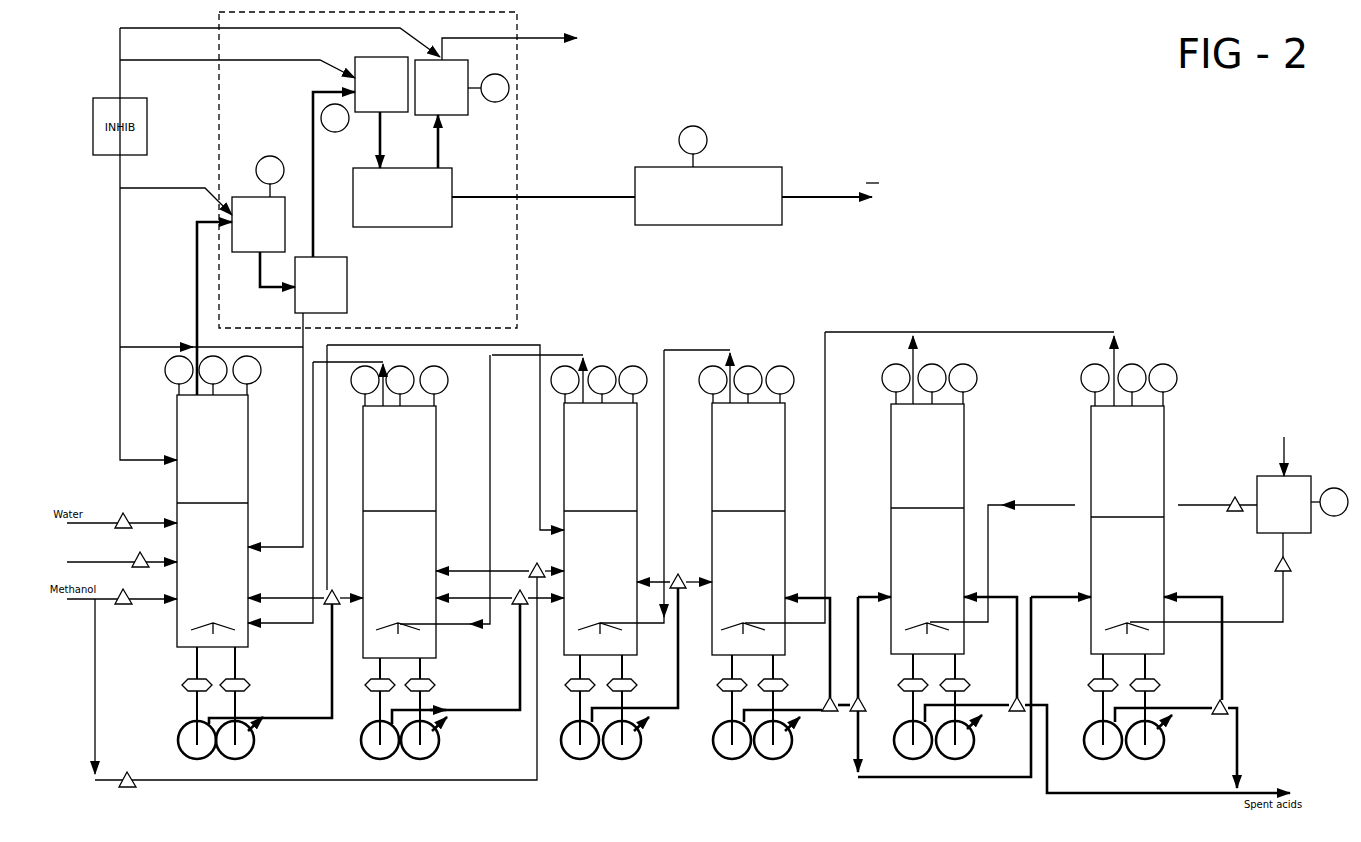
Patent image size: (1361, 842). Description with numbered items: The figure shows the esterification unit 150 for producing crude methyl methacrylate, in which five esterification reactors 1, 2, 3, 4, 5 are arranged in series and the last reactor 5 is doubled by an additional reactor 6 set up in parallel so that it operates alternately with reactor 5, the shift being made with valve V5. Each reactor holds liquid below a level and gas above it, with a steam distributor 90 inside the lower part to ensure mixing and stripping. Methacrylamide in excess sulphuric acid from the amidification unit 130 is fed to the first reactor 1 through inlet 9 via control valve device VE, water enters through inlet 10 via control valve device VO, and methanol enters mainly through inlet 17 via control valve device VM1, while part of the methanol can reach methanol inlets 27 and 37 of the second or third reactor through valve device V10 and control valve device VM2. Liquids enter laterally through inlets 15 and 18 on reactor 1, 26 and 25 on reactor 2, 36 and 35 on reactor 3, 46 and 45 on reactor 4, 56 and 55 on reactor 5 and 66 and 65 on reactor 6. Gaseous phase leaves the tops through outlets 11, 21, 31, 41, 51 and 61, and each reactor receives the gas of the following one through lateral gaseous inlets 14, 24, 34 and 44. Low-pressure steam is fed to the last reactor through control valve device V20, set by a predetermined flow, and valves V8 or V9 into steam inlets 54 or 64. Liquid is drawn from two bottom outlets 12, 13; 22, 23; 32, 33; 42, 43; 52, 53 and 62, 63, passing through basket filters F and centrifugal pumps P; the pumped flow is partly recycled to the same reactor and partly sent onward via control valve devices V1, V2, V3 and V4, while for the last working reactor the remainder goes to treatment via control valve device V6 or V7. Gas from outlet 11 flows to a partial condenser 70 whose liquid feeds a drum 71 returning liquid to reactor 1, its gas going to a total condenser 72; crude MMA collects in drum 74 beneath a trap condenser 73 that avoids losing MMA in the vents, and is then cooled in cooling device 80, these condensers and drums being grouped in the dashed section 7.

The esterification unit 150 is at (1097, 152).
The distillation/separation section 7 is at (476, 225).
The partial condenser 70 is at (241, 275).
The drum 71 is at (307, 202).
The total condenser 72 is at (364, 112).
The trap condenser 73 is at (496, 94).
The drum 74 is at (494, 197).
The cooling device 80 is at (764, 175).
The first esterification reactor 1 is at (248, 536).
The second esterification reactor 2 is at (438, 545).
The third esterification reactor 3 is at (585, 554).
The fourth esterification reactor 4 is at (747, 545).
The last esterification reactor 5 is at (950, 545).
The additional reactor 6 is at (1098, 545).
The methacrylamide inlet 9 is at (166, 576).
The water inlet 10 is at (166, 537).
The methanol inlet 17 is at (163, 614).
The gaseous phase outlet 11 is at (201, 408).
The liquid outlet 12 is at (193, 696).
The liquid outlet 13 is at (240, 696).
The gaseous inlet 14 is at (280, 501).
The lateral liquid inlet 15 is at (286, 588).
The lateral liquid inlet 18 is at (275, 430).
The gaseous phase outlet 21 is at (356, 392).
The liquid outlet 22 is at (381, 701).
The liquid outlet 23 is at (422, 701).
The gaseous inlet 24 is at (445, 498).
The lateral liquid inlet 25 is at (474, 607).
The lateral liquid inlet 26 is at (351, 585).
The methanol inlet 27 is at (482, 581).
The gaseous phase outlet 31 is at (545, 381).
The liquid outlet 32 is at (570, 700).
The liquid outlet 33 is at (631, 700).
The gaseous inlet 34 is at (632, 495).
The lateral liquid inlet 35 is at (653, 591).
The lateral liquid inlet 36 is at (556, 609).
The methanol inlet 37 is at (556, 581).
The gaseous phase outlet 41 is at (705, 377).
The liquid outlet 42 is at (729, 700).
The liquid outlet 43 is at (775, 700).
The gaseous inlet 44 is at (785, 485).
The lateral liquid inlet 45 is at (807, 647).
The lateral liquid inlet 46 is at (701, 594).
The gaseous phase outlet 51 is at (876, 369).
The liquid outlet 52 is at (911, 699).
The liquid outlet 53 is at (957, 699).
The steam inlet 54 is at (1002, 572).
The lateral liquid inlet 55 is at (990, 647).
The lateral liquid inlet 56 is at (874, 606).
The gaseous phase outlet 61 is at (1018, 376).
The liquid outlet 62 is at (1100, 699).
The liquid outlet 63 is at (1147, 699).
The steam inlet 64 is at (1206, 586).
The lateral liquid inlet 65 is at (1193, 648).
The lateral liquid inlet 66 is at (1061, 606).
The steam distributor 90 is at (220, 621).
The amidification unit 130 is at (60, 552).
The centrifugal pump P is at (415, 757).
The basket filter F is at (614, 692).
The control valve device V1 is at (343, 591).
The control valve device V2 is at (538, 591).
The control valve device V3 is at (691, 575).
The control valve device V4 is at (836, 711).
The valve V5 is at (940, 687).
The control valve device V6 is at (1149, 745).
The control valve device V7 is at (1224, 744).
The valve V8 is at (1217, 512).
The valve V9 is at (1290, 574).
The valve device V10 is at (545, 564).
The control valve device V20 is at (1302, 476).
The control valve device VO is at (122, 512).
The control valve device VE is at (122, 552).
The control valve device VM1 is at (122, 589).
The control valve device VM2 is at (316, 682).